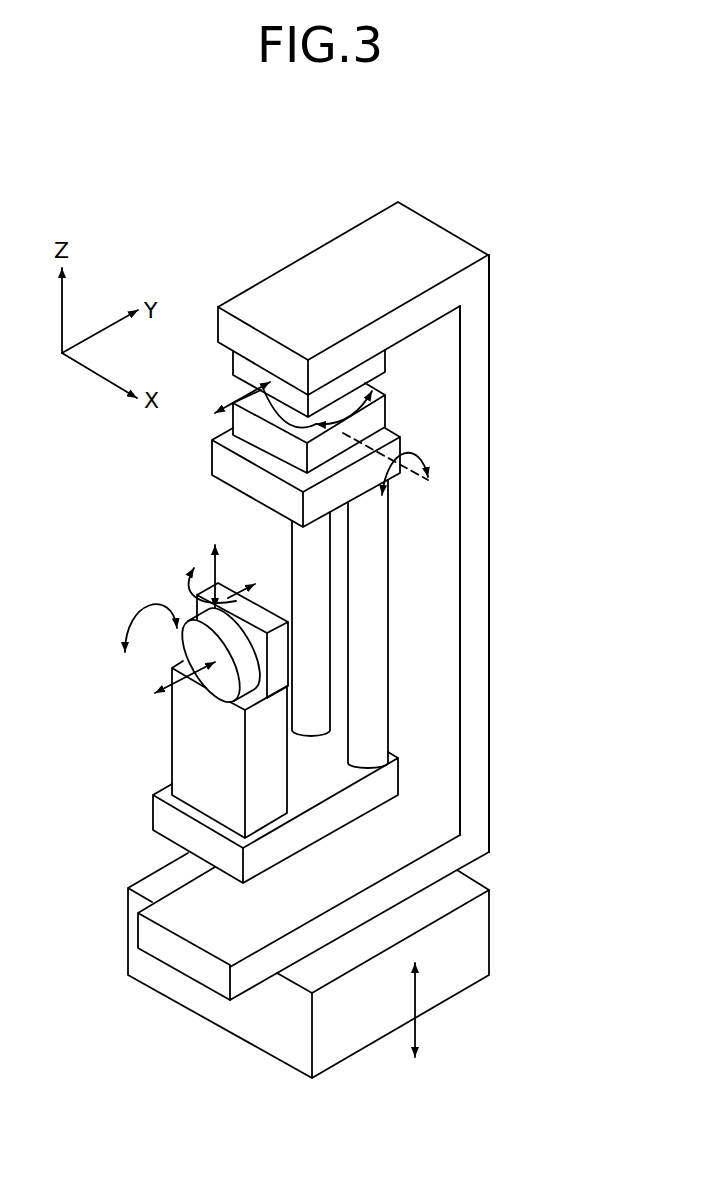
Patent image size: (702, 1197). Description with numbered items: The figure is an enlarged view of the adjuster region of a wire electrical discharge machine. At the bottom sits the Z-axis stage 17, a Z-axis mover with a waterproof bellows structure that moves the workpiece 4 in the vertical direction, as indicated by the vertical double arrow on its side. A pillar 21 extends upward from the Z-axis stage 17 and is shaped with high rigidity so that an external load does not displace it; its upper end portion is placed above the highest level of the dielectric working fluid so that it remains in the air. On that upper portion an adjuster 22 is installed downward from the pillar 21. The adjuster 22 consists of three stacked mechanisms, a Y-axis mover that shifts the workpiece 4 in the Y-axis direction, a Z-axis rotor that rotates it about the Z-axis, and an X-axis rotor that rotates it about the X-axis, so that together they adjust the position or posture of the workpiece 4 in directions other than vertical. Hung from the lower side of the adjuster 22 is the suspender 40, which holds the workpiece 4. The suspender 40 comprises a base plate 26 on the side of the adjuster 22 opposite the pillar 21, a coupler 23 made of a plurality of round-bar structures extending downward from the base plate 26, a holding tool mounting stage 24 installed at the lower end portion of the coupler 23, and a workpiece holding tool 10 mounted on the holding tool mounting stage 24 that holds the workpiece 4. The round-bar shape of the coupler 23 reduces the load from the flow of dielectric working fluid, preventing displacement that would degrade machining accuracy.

The workpiece 4 is at (228, 678).
The workpiece holding tool 10 is at (182, 783).
The Z-axis stage 17 is at (468, 950).
The pillar 21 is at (430, 401).
The adjuster 22 is at (106, 436).
The coupler 23 is at (360, 547).
The holding tool mounting stage 24 is at (172, 815).
The base plate 26 is at (250, 477).
The suspender 40 is at (433, 435).